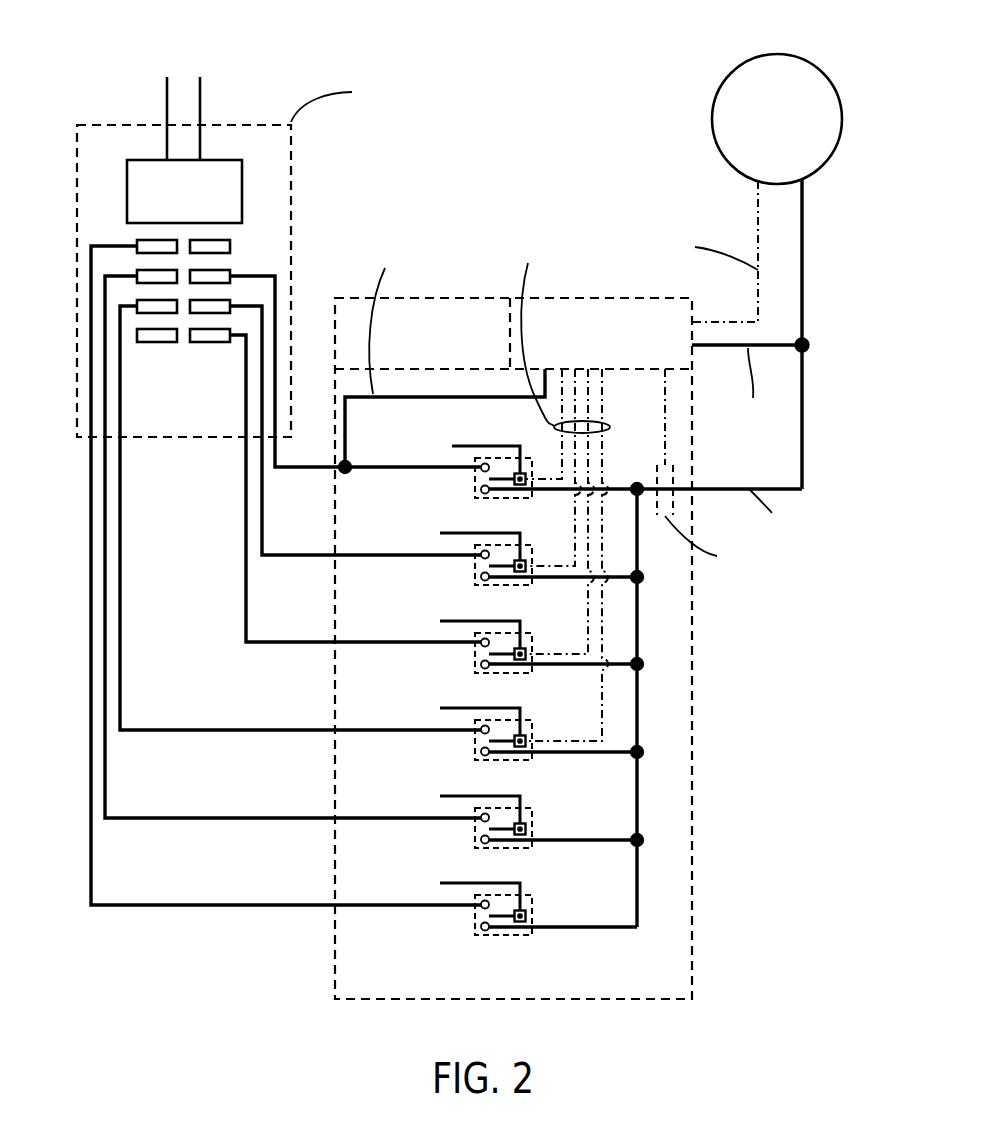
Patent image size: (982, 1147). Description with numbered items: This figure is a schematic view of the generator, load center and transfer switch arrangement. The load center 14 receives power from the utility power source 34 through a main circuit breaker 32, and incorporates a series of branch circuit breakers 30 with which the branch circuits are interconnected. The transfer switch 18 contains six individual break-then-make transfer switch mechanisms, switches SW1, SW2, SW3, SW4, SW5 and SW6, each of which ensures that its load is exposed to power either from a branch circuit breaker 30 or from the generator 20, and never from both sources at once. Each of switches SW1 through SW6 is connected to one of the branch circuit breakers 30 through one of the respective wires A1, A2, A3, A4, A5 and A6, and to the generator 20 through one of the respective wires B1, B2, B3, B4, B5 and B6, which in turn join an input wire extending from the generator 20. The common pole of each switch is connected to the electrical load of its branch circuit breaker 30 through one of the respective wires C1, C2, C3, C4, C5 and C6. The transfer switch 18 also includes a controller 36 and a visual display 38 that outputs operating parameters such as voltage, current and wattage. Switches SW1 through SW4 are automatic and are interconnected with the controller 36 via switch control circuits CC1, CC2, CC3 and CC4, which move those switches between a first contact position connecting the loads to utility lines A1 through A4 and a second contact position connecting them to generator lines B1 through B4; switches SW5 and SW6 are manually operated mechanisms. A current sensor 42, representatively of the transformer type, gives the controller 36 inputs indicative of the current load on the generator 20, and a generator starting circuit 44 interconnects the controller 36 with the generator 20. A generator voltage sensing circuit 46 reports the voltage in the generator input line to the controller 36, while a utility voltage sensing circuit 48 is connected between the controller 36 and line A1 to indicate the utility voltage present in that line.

The load center 14 is at (296, 192).
The transfer switch 18 is at (696, 812).
The generator 20 is at (725, 71).
The branch circuit breakers 30 is at (137, 274).
The main circuit breaker 32 is at (148, 160).
The utility power source 34 is at (200, 106).
The controller 36 is at (632, 313).
The visual display 38 is at (473, 323).
The current sensor 42 is at (674, 497).
The generator starting circuit 44 is at (760, 308).
The generator voltage sensing circuit 46 is at (780, 348).
The utility voltage sensing circuit 48 is at (345, 406).
The wire A1 is at (318, 467).
The wire A2 is at (318, 555).
The wire A3 is at (303, 642).
The wire A4 is at (307, 730).
The wire A5 is at (297, 818).
The wire A6 is at (298, 905).
The wire B1 is at (557, 494).
The wire B2 is at (557, 582).
The wire B3 is at (557, 670).
The wire B4 is at (557, 758).
The wire B5 is at (557, 845).
The wire B6 is at (557, 933).
The wire C1 is at (478, 446).
The wire C2 is at (460, 533).
The wire C3 is at (450, 621).
The wire C4 is at (450, 708).
The wire C5 is at (460, 796).
The wire C6 is at (460, 883).
The switch control circuit CC1 is at (562, 457).
The switch control circuit CC2 is at (575, 532).
The switch control circuit CC3 is at (588, 617).
The switch control circuit CC4 is at (602, 710).
The switch SW1 is at (579, 479).
The switch SW2 is at (493, 567).
The switch SW3 is at (493, 655).
The switch SW4 is at (493, 742).
The switch SW5 is at (493, 830).
The switch SW6 is at (489, 917).